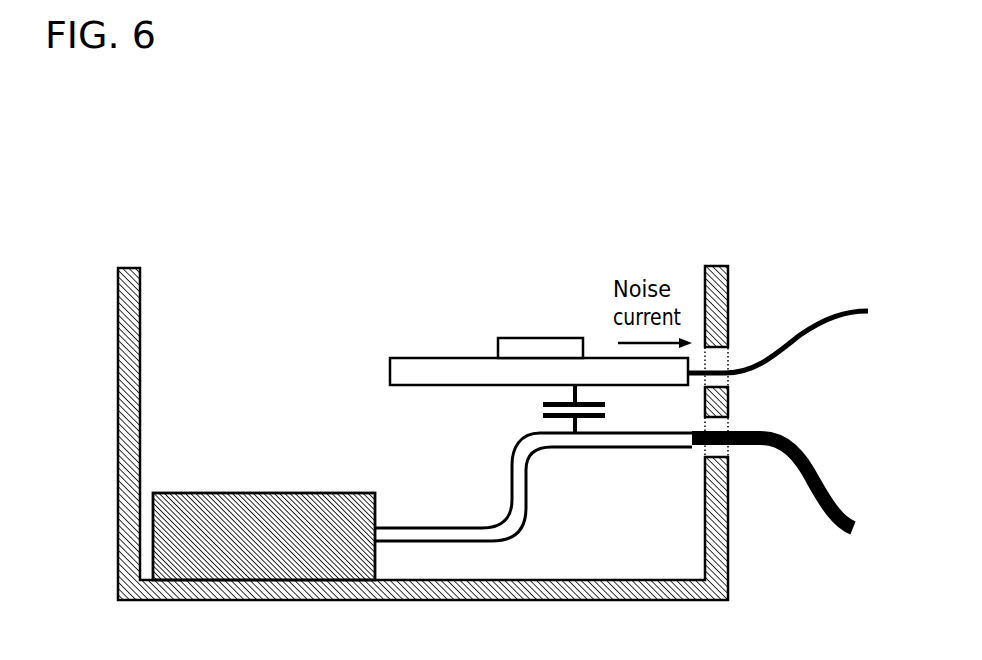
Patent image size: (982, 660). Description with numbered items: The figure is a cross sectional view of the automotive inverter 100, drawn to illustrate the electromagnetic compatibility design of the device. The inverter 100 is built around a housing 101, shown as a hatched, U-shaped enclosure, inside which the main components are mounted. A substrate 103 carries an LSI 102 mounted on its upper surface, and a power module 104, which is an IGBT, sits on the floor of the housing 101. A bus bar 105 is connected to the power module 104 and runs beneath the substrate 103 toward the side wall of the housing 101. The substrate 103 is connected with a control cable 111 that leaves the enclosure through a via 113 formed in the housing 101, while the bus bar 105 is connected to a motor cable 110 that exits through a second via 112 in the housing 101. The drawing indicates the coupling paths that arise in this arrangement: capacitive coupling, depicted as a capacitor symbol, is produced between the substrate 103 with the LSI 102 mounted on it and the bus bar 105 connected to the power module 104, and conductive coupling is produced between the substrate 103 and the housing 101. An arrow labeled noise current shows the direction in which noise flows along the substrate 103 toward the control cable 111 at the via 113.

The automotive inverter 100 is at (284, 178).
The housing 101 is at (141, 405).
The LSI 102 is at (557, 337).
The substrate 103 is at (465, 357).
The power module 104 is at (207, 493).
The bus bar 105 is at (545, 452).
The motor cable 110 is at (813, 477).
The control cable 111 is at (839, 310).
The via 112 is at (729, 417).
The via 113 is at (729, 346).